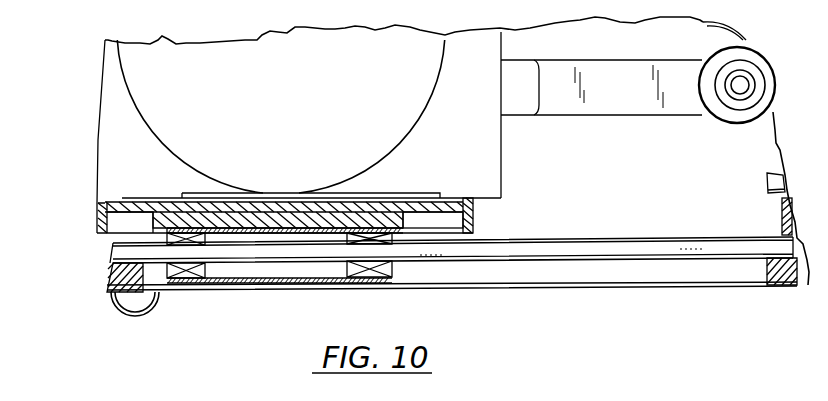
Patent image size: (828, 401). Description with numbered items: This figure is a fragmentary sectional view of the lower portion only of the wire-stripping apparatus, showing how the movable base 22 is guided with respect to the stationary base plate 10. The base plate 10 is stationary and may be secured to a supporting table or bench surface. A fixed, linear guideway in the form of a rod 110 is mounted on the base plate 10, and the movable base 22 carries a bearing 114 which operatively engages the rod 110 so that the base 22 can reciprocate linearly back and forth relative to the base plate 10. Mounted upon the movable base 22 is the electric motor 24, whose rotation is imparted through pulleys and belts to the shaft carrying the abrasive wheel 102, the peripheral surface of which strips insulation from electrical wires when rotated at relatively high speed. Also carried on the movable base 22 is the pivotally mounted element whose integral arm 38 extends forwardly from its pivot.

The base plate 10 is at (618, 287).
The movable base 22 is at (97, 222).
The electric motor 24 is at (297, 108).
The arm 38 is at (597, 92).
The abrasive wheel 102 is at (738, 120).
The rod 110 is at (480, 248).
The bearing 114 is at (347, 271).